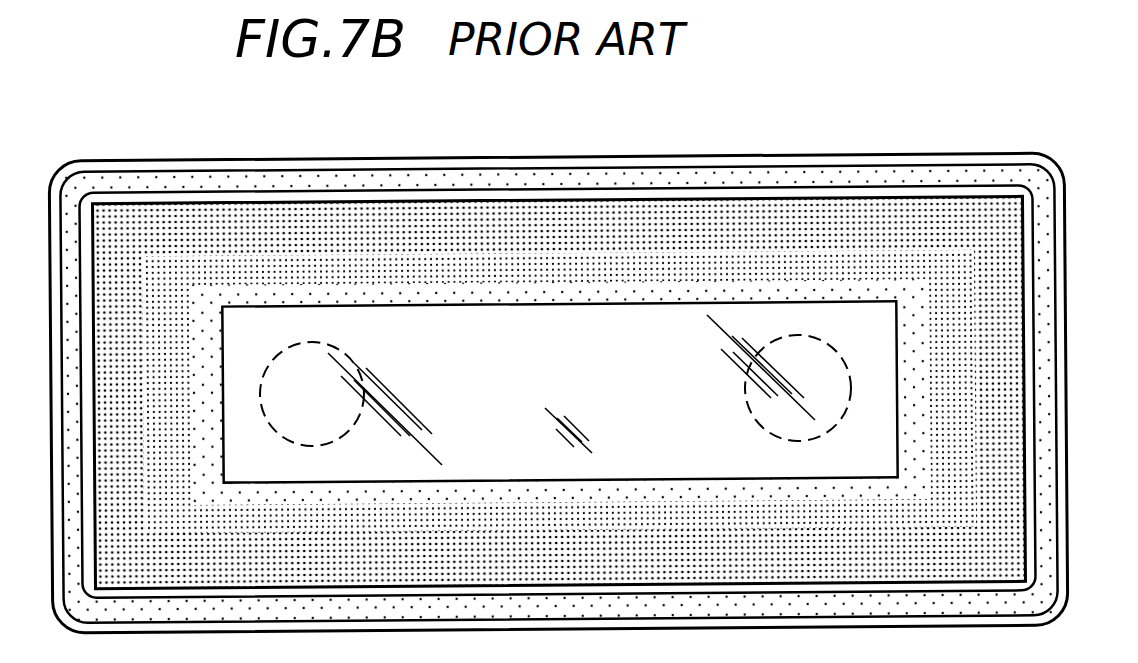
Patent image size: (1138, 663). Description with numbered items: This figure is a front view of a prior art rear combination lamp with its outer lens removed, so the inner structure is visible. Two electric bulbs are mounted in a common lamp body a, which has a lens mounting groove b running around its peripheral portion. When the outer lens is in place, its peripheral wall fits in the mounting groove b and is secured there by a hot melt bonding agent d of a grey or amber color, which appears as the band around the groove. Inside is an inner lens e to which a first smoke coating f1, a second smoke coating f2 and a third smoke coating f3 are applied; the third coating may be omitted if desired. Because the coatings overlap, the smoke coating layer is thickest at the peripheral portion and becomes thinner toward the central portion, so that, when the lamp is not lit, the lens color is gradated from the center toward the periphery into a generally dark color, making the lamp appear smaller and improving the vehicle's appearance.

The lamp body a is at (713, 156).
The lens mounting groove b is at (901, 168).
The hot melt bonding agent d is at (318, 176).
The inner lens e is at (1012, 258).
The first smoke coating f1 is at (456, 302).
The second smoke coating f2 is at (535, 272).
The third smoke coating f3 is at (614, 238).